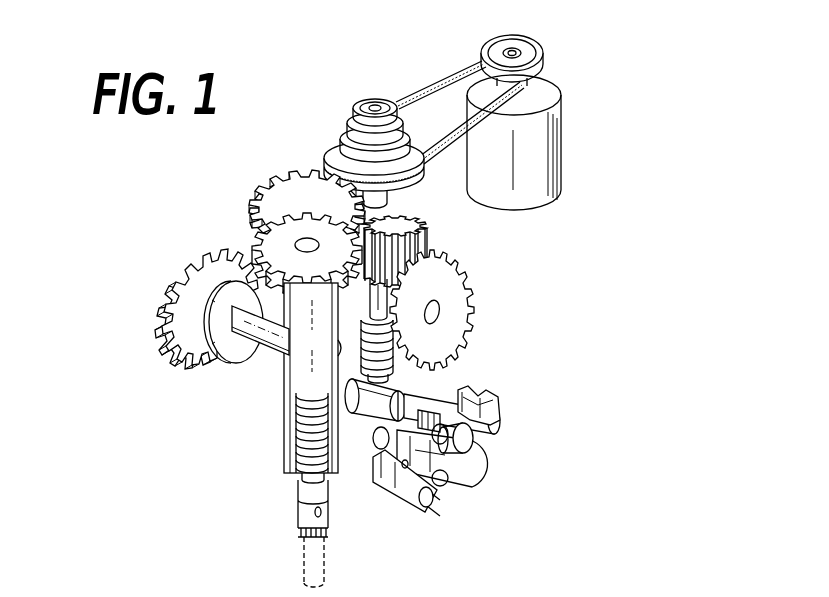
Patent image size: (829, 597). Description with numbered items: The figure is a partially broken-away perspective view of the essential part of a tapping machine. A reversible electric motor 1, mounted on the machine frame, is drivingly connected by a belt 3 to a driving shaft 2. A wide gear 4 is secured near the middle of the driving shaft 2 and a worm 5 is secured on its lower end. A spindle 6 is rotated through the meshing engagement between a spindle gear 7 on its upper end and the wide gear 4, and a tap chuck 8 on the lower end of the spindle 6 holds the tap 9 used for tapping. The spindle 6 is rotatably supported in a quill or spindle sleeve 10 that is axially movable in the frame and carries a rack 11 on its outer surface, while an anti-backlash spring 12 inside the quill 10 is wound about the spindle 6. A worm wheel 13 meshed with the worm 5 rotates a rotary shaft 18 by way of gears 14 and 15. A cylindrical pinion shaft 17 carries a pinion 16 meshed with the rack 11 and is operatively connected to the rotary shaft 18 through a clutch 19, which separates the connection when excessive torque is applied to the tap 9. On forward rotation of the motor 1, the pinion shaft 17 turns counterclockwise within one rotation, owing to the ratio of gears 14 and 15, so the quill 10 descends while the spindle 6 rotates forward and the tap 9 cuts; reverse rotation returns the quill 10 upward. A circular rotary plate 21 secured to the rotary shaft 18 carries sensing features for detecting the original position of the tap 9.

The reversible electric motor 1 is at (553, 126).
The driving shaft 2 is at (390, 203).
The belt 3 is at (420, 94).
The wide gear 4 is at (428, 236).
The worm 5 is at (395, 368).
The spindle 6 is at (305, 242).
The spindle gear 7 is at (277, 243).
The tap chuck 8 is at (300, 512).
The tap 9 is at (318, 566).
The quill or spindle sleeve 10 is at (296, 378).
The rack 11 is at (344, 349).
The anti-backlash spring 12 is at (310, 455).
The worm wheel 13 is at (467, 281).
The gear 14 is at (304, 170).
The gear 15 is at (197, 271).
The pinion 16 is at (363, 413).
The pinion shaft 17 is at (265, 339).
The rotary shaft 18 is at (468, 450).
The clutch 19 is at (462, 431).
The rotary plate 21 is at (228, 338).